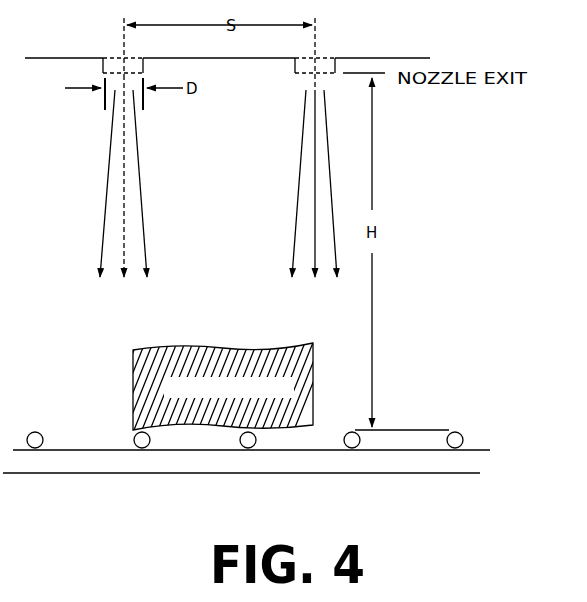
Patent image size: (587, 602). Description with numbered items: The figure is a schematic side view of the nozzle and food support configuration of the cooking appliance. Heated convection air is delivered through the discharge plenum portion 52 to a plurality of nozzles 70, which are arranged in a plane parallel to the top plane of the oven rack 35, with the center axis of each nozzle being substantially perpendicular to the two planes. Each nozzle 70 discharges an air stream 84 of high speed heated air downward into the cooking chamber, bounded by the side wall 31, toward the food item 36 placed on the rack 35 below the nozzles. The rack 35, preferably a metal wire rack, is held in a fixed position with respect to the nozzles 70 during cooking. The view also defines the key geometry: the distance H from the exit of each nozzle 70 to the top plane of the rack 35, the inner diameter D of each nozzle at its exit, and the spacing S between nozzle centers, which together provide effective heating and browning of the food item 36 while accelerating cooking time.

The nozzle 70 is at (117, 61).
The discharge plenum portion 52 is at (352, 42).
The air stream 84 is at (107, 138).
The side wall 31 is at (235, 188).
The food item 36 is at (143, 390).
The oven rack 35 is at (465, 437).